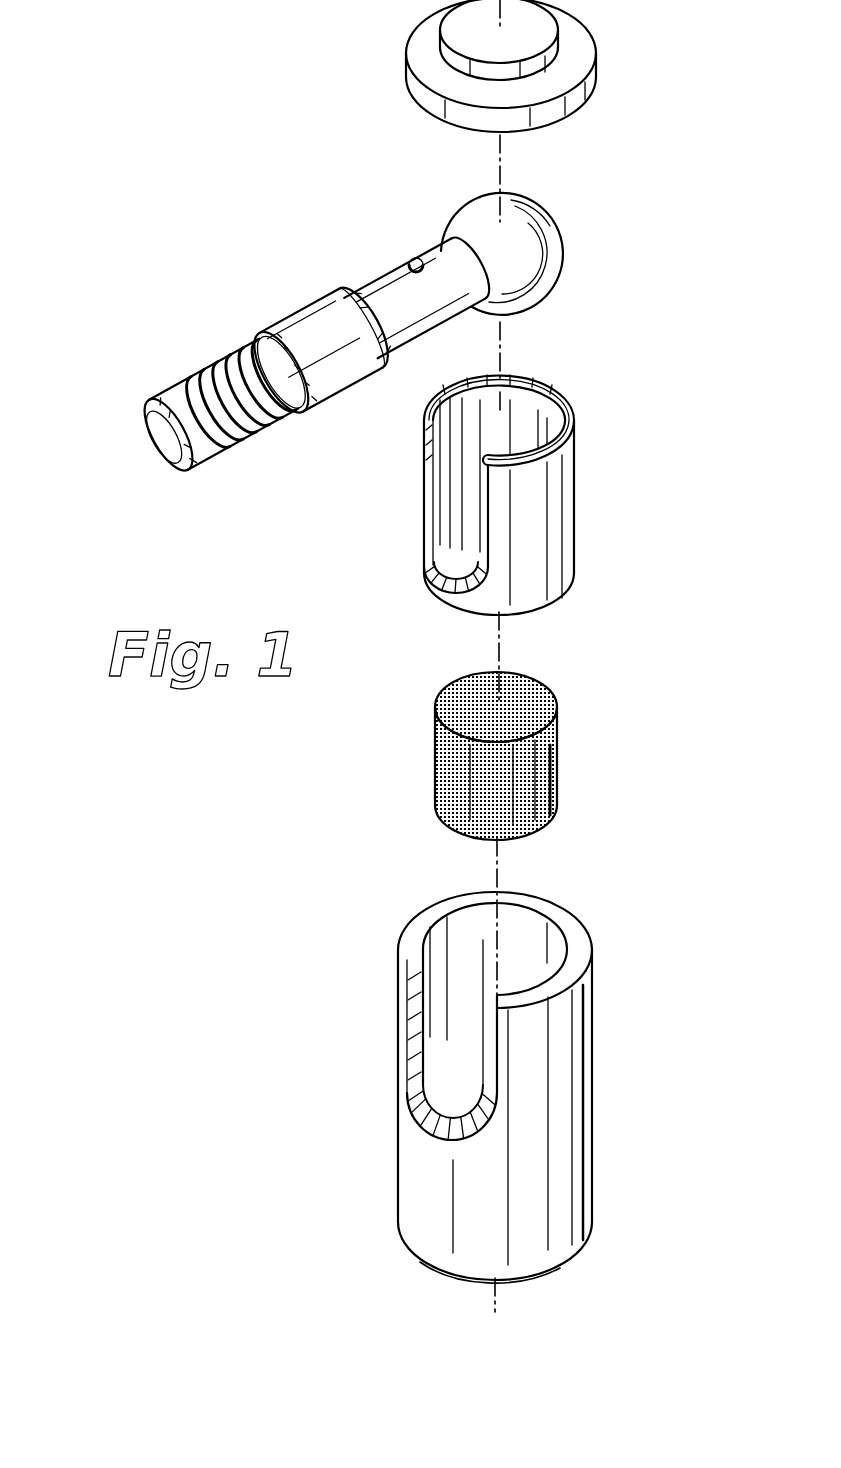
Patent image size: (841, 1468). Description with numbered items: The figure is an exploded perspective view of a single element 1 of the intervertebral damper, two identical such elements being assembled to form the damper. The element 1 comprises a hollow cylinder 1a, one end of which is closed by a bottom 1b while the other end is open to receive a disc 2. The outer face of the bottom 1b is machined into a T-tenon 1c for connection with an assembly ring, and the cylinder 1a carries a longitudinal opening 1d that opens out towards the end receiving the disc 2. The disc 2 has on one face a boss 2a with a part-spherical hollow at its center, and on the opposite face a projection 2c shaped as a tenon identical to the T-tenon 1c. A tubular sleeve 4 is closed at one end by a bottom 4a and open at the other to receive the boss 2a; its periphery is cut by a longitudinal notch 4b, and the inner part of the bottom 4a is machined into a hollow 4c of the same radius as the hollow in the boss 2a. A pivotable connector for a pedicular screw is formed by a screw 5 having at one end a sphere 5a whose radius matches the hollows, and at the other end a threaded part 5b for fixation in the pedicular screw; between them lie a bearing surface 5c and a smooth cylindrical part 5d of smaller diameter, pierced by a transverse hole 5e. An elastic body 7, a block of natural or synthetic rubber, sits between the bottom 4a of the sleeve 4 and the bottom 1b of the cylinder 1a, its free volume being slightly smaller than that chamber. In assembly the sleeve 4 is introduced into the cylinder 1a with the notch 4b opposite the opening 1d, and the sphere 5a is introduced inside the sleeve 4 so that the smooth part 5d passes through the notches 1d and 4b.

The element 1 is at (326, 1089).
The hollow cylinder 1a is at (413, 1170).
The bottom 1b is at (403, 1252).
The T-tenon 1c is at (470, 1279).
The longitudinal opening 1d is at (403, 1068).
The disc 2 is at (437, 87).
The boss 2a is at (480, 133).
The projection 2c is at (475, 47).
The tubular sleeve 4 is at (491, 514).
The bottom 4a is at (540, 612).
The longitudinal notch 4b is at (437, 533).
The hollow 4c is at (478, 563).
The screw 5 is at (411, 345).
The sphere 5a is at (542, 250).
The threaded part 5b is at (216, 408).
The bearing surface 5c is at (321, 350).
The smooth cylindrical part 5d is at (420, 295).
The transverse hole 5e is at (410, 258).
The elastic body 7 is at (450, 779).